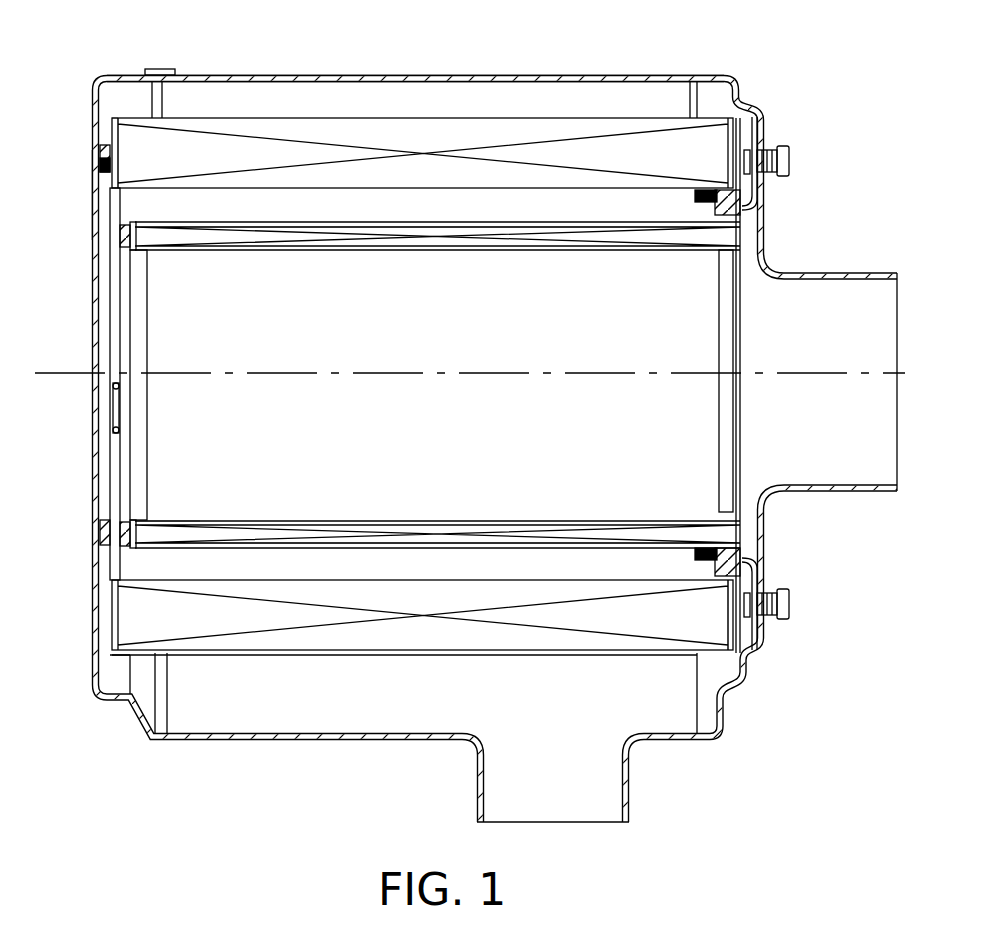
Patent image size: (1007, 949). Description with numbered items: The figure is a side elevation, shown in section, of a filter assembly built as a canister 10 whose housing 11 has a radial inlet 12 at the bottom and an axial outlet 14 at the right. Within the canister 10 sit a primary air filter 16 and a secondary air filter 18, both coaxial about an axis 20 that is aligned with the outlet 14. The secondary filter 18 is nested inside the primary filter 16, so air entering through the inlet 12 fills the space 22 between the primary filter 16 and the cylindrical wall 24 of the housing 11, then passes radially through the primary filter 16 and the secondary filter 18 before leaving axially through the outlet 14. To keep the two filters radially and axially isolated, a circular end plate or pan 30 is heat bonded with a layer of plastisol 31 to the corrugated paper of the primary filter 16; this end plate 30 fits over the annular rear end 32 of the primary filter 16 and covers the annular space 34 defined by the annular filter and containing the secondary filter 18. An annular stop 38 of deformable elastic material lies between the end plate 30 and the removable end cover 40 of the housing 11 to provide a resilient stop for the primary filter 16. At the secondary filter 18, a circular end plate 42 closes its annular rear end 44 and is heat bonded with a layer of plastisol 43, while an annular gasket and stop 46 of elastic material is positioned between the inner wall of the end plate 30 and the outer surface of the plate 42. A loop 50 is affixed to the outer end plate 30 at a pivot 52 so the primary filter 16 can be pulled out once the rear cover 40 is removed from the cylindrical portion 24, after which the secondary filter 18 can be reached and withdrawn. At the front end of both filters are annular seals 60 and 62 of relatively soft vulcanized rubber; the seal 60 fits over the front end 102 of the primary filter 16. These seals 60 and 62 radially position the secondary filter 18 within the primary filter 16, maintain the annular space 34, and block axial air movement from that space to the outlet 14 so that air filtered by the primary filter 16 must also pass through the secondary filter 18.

The canister 10 is at (470, 414).
The housing 11 is at (397, 72).
The radial inlet 12 is at (603, 804).
The axial outlet 14 is at (848, 296).
The primary air filter 16 is at (378, 137).
The secondary air filter 18 is at (220, 236).
The axis 20 is at (440, 366).
The space 22 is at (588, 116).
The cylindrical wall 24 is at (466, 84).
The end plate 30 is at (122, 205).
The layer of plastisol 31 is at (121, 136).
The annular rear end 32 is at (108, 160).
The annular space 34 is at (395, 218).
The annular stop 38 is at (104, 152).
The removable end cover 40 is at (96, 237).
The circular end plate 42 is at (148, 318).
The layer of plastisol 43 is at (128, 238).
The annular rear end 44 is at (142, 528).
The annular gasket and stop 46 is at (106, 532).
The loop 50 is at (113, 407).
The pivot 52 is at (120, 385).
The annular seal 60 is at (692, 200).
The annular seal 62 is at (700, 222).
The front end 102 is at (726, 610).